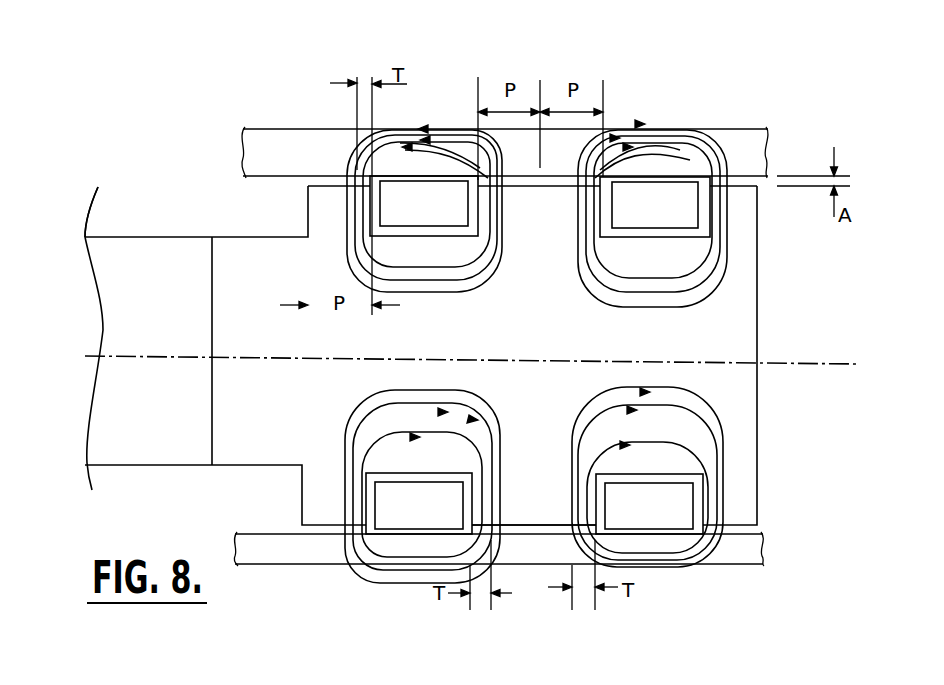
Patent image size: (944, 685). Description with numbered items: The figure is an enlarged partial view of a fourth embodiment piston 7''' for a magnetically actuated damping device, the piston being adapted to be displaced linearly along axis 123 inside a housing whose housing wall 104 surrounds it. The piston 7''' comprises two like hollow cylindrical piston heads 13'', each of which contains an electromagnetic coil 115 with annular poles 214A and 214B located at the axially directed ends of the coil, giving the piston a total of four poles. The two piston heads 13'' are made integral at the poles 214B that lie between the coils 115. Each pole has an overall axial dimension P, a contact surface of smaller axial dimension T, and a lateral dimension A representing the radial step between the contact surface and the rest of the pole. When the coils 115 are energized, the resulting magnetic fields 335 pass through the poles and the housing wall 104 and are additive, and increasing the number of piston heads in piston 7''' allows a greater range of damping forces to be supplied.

The housing wall 104 is at (750, 140).
The electromagnetic coil 115 is at (662, 193).
The magnetic fields 335 is at (447, 150).
The pole 214A is at (317, 203).
The pole 214B is at (570, 487).
The piston head 13'' is at (480, 365).
The fourth embodiment piston 7''' is at (131, 187).
The axis 123 is at (813, 364).